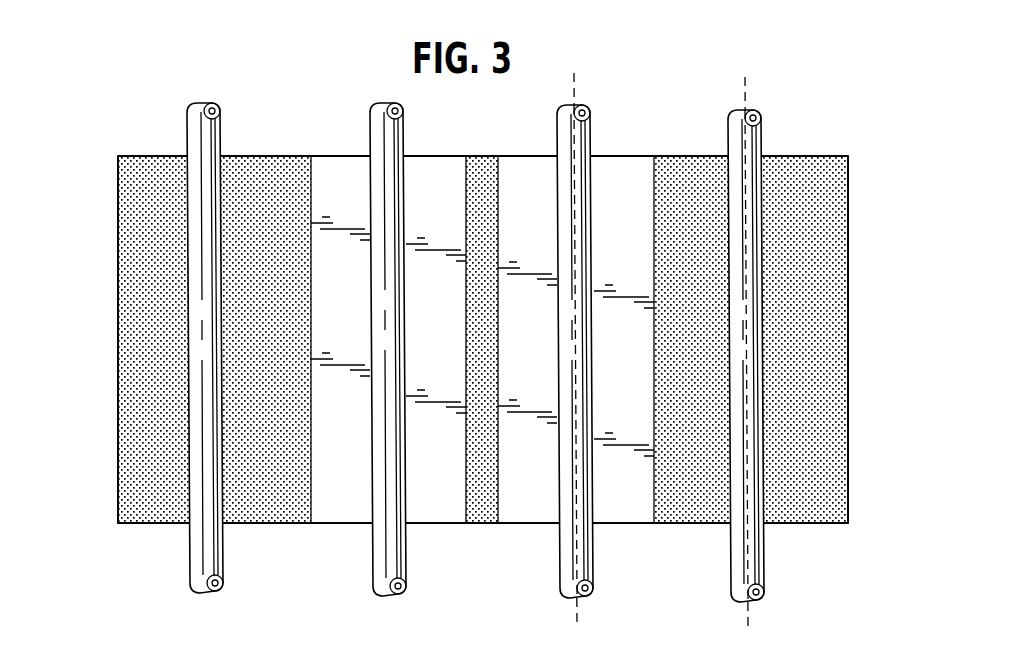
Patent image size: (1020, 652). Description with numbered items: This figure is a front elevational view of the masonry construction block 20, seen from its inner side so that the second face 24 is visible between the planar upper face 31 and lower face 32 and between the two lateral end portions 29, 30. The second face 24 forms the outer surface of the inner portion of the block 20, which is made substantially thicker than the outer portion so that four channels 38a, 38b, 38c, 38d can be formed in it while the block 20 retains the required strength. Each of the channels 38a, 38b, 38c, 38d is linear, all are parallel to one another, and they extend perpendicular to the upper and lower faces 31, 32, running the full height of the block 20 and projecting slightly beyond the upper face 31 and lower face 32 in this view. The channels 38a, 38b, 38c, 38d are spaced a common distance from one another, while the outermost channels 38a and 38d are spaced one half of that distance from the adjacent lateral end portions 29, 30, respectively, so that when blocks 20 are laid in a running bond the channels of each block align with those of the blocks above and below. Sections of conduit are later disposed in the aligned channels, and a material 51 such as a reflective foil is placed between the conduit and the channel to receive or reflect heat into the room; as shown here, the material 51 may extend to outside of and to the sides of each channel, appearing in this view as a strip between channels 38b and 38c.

The masonry construction block 20 is at (92, 265).
The second face 24 is at (147, 350).
The lateral end portion 29 is at (118, 307).
The lateral end portion 30 is at (850, 320).
The upper face 31 is at (162, 156).
The lower face 32 is at (160, 523).
The channel 38a is at (223, 156).
The channel 38b is at (407, 156).
The channel 38c is at (594, 156).
The channel 38d is at (765, 156).
The material 51 is at (520, 500).